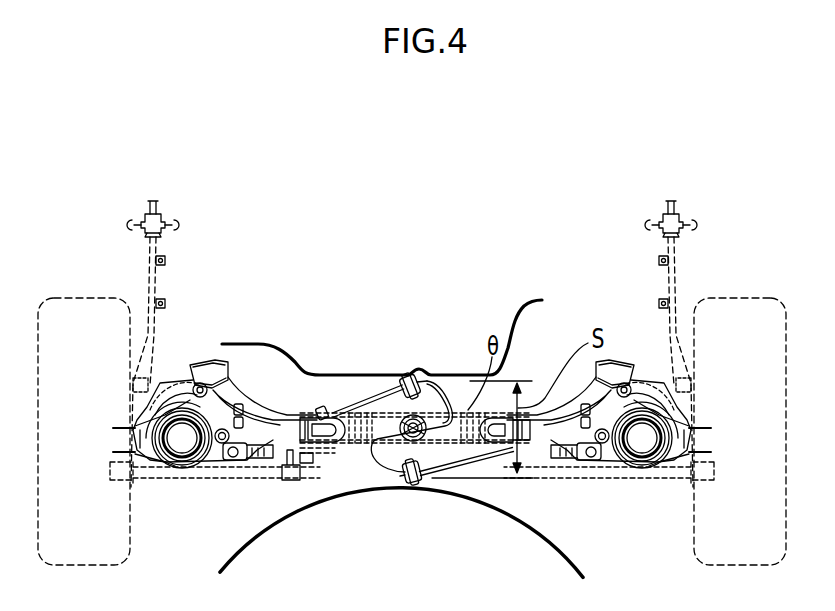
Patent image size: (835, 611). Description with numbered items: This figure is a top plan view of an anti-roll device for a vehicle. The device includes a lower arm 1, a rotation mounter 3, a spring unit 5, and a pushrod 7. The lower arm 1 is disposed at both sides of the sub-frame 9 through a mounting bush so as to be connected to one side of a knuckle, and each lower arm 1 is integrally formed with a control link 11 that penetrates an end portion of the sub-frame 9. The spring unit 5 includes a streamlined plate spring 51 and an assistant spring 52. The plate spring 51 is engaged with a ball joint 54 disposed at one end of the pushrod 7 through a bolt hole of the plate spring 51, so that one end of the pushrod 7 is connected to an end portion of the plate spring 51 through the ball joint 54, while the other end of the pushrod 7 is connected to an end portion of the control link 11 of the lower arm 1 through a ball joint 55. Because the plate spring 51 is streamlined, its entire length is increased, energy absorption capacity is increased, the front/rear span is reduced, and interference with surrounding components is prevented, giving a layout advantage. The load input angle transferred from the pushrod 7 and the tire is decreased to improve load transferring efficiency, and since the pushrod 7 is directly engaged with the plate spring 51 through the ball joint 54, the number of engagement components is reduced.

The lower arm 1 is at (647, 462).
The rotation mounter 3 is at (432, 456).
The spring unit 5 is at (396, 432).
The pushrod 7 is at (363, 405).
The sub-frame 9 is at (355, 446).
The control link 11 is at (317, 468).
The streamlined plate spring 51 is at (381, 460).
The assistant spring 52 is at (447, 418).
The ball joint 54 is at (404, 378).
The ball joint 55 is at (325, 415).